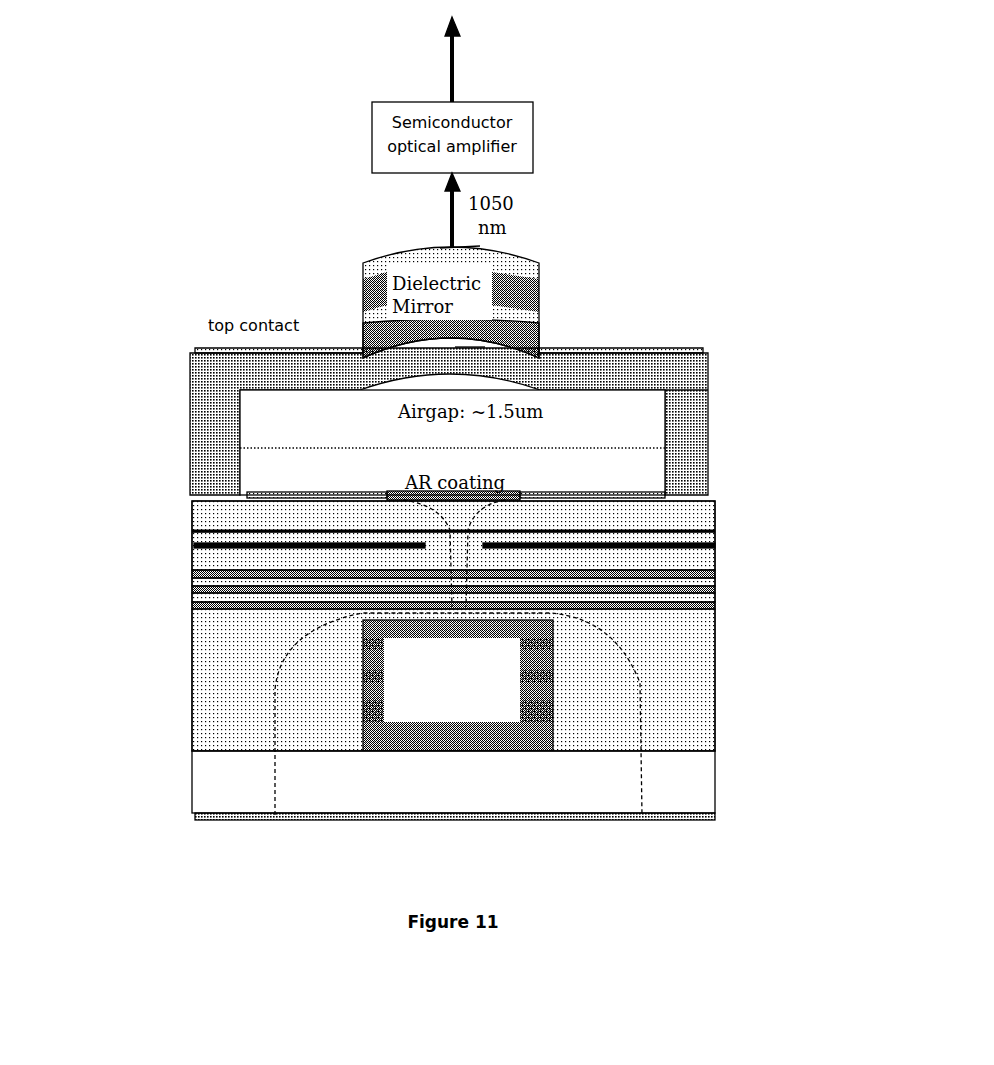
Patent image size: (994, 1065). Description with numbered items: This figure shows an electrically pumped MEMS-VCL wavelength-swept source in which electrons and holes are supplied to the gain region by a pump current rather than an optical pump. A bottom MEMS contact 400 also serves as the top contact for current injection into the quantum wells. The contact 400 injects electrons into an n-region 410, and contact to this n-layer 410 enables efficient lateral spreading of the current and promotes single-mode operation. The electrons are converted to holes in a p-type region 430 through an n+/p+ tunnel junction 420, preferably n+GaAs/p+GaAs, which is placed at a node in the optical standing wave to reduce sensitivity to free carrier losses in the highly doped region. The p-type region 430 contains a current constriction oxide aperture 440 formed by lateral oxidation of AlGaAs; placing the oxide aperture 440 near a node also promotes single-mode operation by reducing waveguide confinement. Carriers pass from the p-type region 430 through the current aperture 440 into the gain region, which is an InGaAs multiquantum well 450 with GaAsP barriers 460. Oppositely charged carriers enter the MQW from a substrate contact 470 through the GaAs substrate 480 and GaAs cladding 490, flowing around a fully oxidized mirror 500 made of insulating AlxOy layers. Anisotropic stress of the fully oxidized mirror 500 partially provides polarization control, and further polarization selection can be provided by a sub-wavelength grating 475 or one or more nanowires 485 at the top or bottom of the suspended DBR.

The bottom MEMS contact 400 is at (300, 489).
The n-region 410 is at (453, 516).
The n+/p+ tunnel junction 420 is at (603, 543).
The p-type region 430 is at (453, 551).
The oxide aperture 440 is at (627, 530).
The InGaAs multiquantum well 450 is at (192, 605).
The GaAsP barriers 460 is at (715, 618).
The substrate contact 470 is at (300, 815).
The sub-wavelength grating 475 is at (468, 247).
The GaAs substrate 480 is at (453, 782).
The nanowires 485 is at (470, 347).
The GaAs cladding 490 is at (453, 680).
The fully oxidized mirror 500 is at (458, 685).